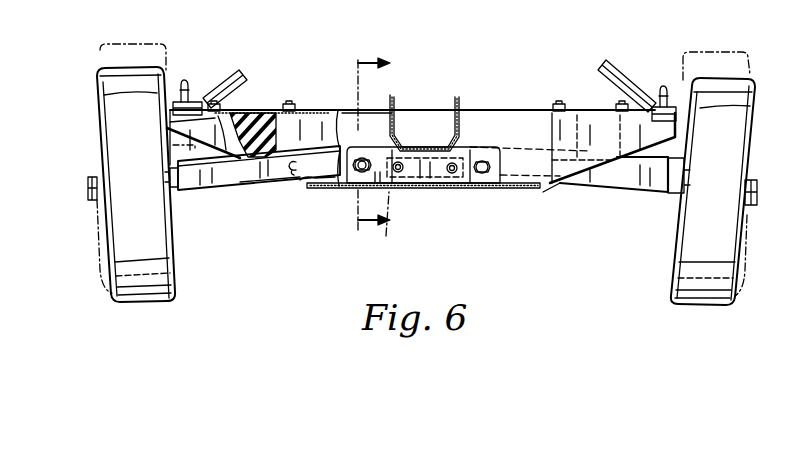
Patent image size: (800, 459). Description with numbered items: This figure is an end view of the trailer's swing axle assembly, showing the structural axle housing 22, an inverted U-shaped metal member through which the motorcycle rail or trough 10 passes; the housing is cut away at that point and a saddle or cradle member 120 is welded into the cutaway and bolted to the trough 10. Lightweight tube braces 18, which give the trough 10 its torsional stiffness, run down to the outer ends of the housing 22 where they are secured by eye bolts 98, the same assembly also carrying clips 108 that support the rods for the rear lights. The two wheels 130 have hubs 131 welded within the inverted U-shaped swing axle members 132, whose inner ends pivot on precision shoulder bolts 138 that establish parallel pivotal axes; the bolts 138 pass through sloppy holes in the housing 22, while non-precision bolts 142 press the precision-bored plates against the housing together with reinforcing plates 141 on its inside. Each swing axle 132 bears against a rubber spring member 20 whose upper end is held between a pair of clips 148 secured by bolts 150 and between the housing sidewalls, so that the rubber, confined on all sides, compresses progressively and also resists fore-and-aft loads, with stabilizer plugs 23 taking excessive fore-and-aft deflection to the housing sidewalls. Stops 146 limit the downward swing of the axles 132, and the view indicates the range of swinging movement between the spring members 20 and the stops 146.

The trough 10 is at (426, 147).
The tube braces 18 is at (240, 72).
The rubber member 20 is at (257, 112).
The structural axle housing 22 is at (532, 140).
The stabilizer plugs 23 is at (274, 182).
The eye bolts 98 is at (183, 80).
The clips 108 is at (677, 120).
The saddle or cradle member 120 is at (459, 110).
The wheels 130 is at (100, 50).
The hubs 131 is at (176, 194).
The swing axle members 132 is at (231, 192).
The precision bolt 138 is at (364, 158).
The reinforcing plates 141 is at (384, 226).
The bolts 142 is at (397, 176).
The stops 146 is at (320, 180).
The clips 148 is at (172, 126).
The bolts 150 is at (213, 102).